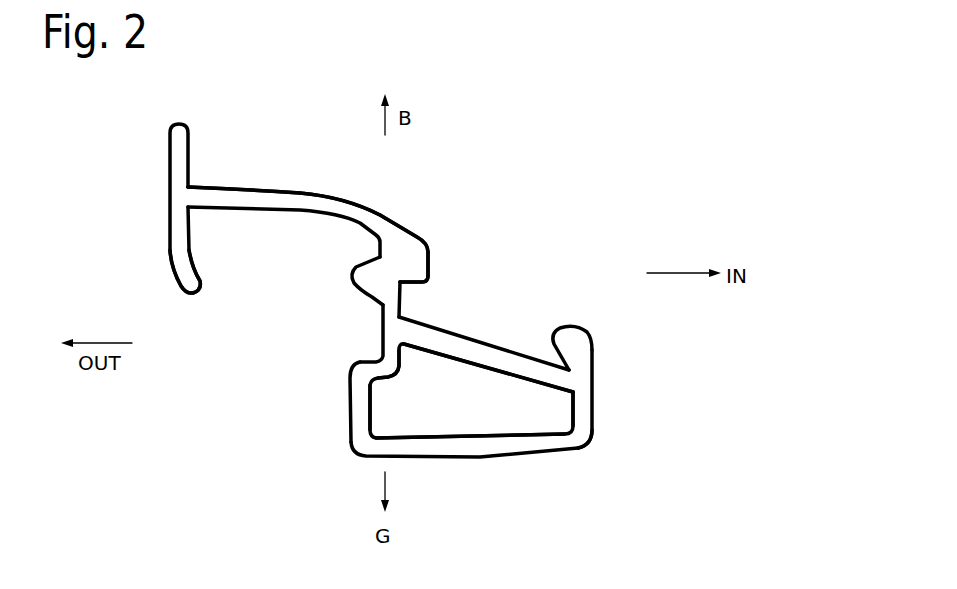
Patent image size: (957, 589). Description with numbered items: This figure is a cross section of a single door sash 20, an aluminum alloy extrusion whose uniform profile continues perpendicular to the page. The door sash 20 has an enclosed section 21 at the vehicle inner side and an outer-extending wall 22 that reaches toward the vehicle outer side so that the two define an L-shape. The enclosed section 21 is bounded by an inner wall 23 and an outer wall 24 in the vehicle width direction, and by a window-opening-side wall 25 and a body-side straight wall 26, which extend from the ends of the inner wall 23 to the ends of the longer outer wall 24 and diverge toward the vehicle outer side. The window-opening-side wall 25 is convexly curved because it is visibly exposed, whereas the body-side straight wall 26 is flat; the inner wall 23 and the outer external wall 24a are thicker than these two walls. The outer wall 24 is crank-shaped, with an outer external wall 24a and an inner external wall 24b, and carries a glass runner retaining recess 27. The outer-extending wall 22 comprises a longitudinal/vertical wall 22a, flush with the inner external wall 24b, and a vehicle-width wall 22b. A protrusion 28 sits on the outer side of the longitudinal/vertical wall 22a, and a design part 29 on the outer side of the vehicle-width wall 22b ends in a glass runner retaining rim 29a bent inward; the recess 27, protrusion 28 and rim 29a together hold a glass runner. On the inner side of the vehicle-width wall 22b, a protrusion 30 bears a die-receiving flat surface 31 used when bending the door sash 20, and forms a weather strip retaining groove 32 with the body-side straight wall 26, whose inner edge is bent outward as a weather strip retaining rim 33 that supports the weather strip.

The door sash 20 is at (567, 461).
The enclosed section 21 is at (550, 417).
The outer-extending wall 22 is at (503, 162).
The longitudinal/vertical wall 22a is at (430, 281).
The vehicle-width wall 22b is at (300, 191).
The inner wall 23 is at (587, 410).
The outer wall 24 is at (465, 367).
The outer external wall 24a is at (364, 397).
The inner external wall 24b is at (393, 357).
The window-opening-side wall 25 is at (492, 445).
The body-side straight wall 26 is at (522, 363).
The glass runner retaining recess 27 is at (370, 332).
The protrusion 28 is at (357, 270).
The design part 29 is at (172, 207).
The glass runner retaining rim 29a is at (193, 285).
The protrusion 30 is at (407, 253).
The die-receiving flat surface 31 is at (434, 254).
The weather strip retaining groove 32 is at (410, 302).
The weather strip retaining rim 33 is at (572, 349).